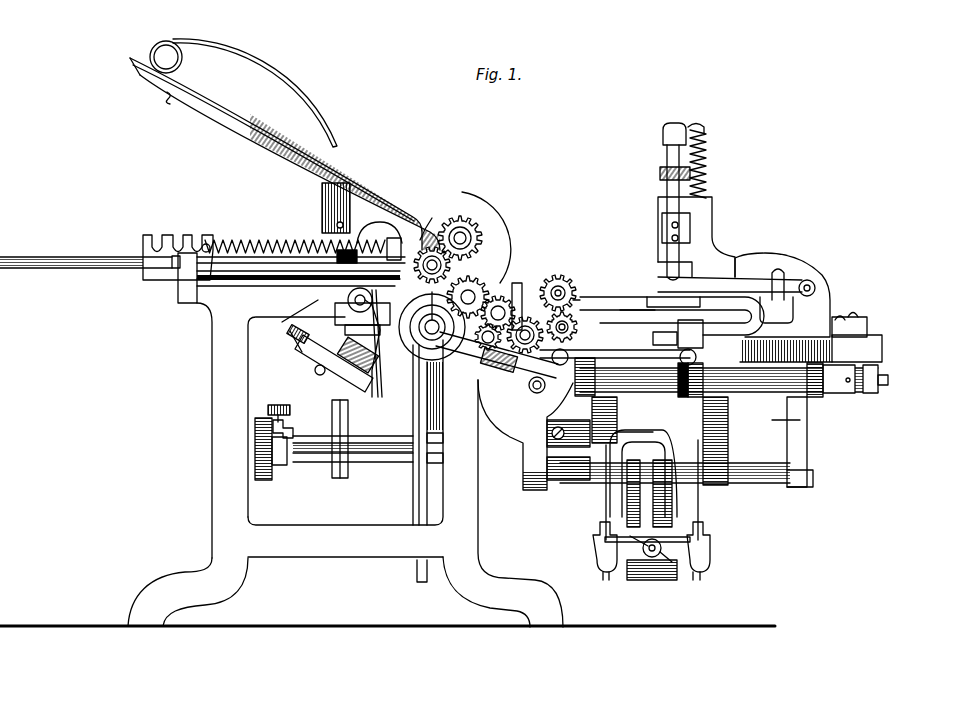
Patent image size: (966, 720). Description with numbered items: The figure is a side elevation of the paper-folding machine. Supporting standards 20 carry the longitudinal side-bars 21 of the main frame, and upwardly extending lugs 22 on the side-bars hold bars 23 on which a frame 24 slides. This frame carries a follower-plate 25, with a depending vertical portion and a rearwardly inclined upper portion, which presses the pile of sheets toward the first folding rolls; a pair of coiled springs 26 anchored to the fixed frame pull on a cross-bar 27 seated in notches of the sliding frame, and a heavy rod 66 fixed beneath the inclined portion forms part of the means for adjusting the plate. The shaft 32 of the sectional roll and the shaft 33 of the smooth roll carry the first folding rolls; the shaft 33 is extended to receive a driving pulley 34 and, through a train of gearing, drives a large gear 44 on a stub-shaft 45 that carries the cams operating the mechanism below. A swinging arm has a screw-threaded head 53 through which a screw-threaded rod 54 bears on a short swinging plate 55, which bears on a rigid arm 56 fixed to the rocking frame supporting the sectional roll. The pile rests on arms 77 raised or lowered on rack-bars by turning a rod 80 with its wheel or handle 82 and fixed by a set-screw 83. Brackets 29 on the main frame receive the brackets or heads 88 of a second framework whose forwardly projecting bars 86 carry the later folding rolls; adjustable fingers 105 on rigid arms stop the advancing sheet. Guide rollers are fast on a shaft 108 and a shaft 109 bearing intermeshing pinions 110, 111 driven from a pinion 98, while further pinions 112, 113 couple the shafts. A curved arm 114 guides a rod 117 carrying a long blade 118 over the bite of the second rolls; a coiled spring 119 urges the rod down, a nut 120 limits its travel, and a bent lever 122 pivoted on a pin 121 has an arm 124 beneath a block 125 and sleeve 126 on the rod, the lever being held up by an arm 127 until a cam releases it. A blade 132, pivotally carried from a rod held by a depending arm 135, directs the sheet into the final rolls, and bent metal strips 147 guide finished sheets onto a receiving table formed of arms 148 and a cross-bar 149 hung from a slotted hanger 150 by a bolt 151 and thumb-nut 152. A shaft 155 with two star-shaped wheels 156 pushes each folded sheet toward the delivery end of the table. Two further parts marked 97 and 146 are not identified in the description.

The supporting standards 20 is at (218, 508).
The side-bars 21 is at (298, 320).
The lugs 22 is at (190, 263).
The bars 23 is at (200, 275).
The frame 24 is at (266, 277).
The follower-plate 25 is at (290, 163).
The coiled springs 26 is at (268, 244).
The cross-bar 27 is at (202, 246).
The brackets 29 is at (498, 410).
The shaft 32 is at (465, 232).
The shaft 33 is at (432, 258).
The driving pulley 34 is at (430, 258).
The large gear 44 is at (416, 313).
The stub-shaft 45 is at (431, 340).
The screw-threaded head 53 is at (316, 358).
The screw-threaded rod 54 is at (336, 312).
The swinging plate 55 is at (380, 357).
The rigid arm 56 is at (375, 373).
The rod 66 is at (343, 470).
The arms 77 is at (322, 438).
The operating rod 80 is at (397, 455).
The wheel or handle 82 is at (263, 478).
The set-screw 83 is at (285, 415).
The bars 86 is at (877, 345).
The brackets or heads 88 is at (523, 413).
The pin 97 is at (552, 350).
The pinion 98 is at (512, 325).
The adjustable finger 105 is at (757, 337).
The shaft 108 is at (558, 287).
The shaft 109 is at (578, 342).
The pinion 110 is at (565, 318).
The pinion 111 is at (487, 265).
The pinion 112 is at (475, 292).
The pinion 113 is at (503, 306).
The curved arm 114 is at (723, 257).
The rod 117 is at (665, 152).
The blade 118 is at (617, 310).
The coiled spring 119 is at (708, 157).
The nut 120 is at (472, 517).
The pin 121 is at (813, 283).
The bent lever 122 is at (812, 315).
The arm 124 is at (737, 278).
The block 125 is at (677, 265).
The sleeve portion 126 is at (662, 228).
The arm 127 is at (680, 352).
The blade 132 is at (800, 420).
The arm 135 is at (802, 453).
The bracket 146 is at (708, 530).
The bent metal strips 147 is at (727, 457).
The arms 148 is at (597, 530).
The cross-bar 149 is at (687, 557).
The slotted hanger 150 is at (677, 515).
The bolt 151 is at (647, 557).
The thumb-nut 152 is at (633, 540).
The shaft 155 is at (887, 380).
The star-shaped wheels 156 is at (816, 397).